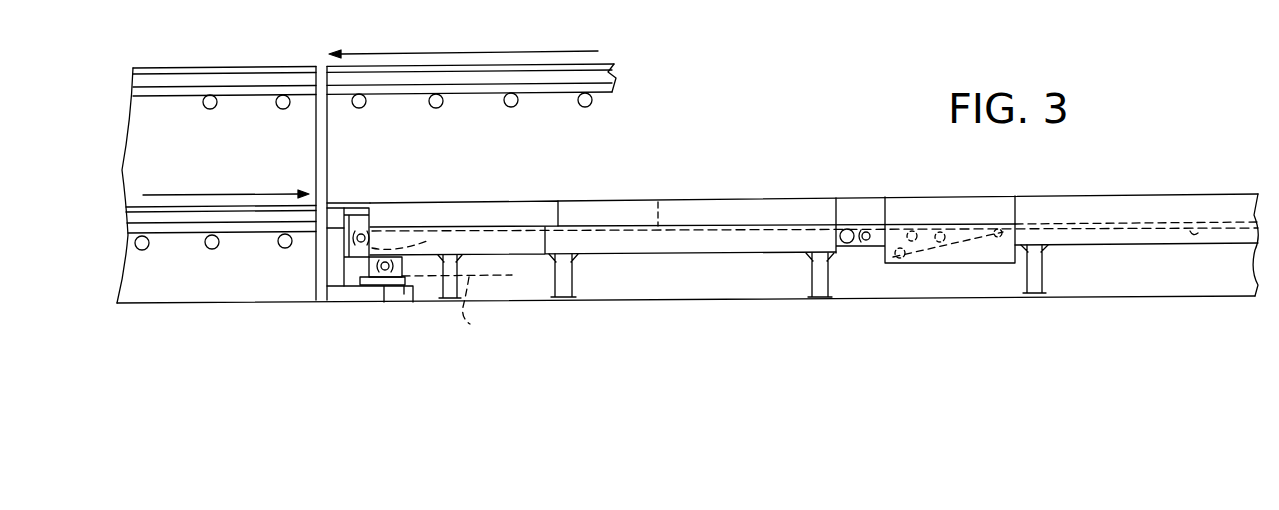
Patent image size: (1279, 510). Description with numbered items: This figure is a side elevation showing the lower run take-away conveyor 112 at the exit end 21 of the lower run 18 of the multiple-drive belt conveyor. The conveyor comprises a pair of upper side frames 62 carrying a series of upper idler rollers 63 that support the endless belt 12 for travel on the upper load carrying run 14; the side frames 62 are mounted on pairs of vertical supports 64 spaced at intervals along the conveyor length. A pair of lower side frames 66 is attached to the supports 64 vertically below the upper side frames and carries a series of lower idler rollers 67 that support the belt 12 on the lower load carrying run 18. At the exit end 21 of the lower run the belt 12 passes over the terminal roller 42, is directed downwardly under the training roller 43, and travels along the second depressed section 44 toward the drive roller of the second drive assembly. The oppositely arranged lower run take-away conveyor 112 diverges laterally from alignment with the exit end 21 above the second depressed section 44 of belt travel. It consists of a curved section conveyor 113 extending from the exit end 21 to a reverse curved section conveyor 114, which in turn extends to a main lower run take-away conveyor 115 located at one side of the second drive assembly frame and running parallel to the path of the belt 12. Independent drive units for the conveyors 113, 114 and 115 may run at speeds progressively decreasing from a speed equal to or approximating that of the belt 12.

The endless belt 12 is at (686, 307).
The upper load carrying run 14 is at (188, 62).
The lower load carrying run 18 is at (158, 200).
The exit end of the lower run 21 is at (376, 216).
The terminal roller 42 is at (417, 244).
The training roller 43 is at (398, 288).
The second depressed section 44 is at (503, 283).
The upper side frames 62 is at (243, 64).
The upper idler rollers 63 is at (212, 109).
The vertical supports 64 is at (333, 142).
The lower side frames 66 is at (182, 235).
The lower idler rollers 67 is at (214, 249).
The lower run take-away conveyor 112 is at (758, 182).
The curved section conveyor 113 is at (517, 200).
The reverse curved section conveyor 114 is at (720, 256).
The main lower run take-away conveyor 115 is at (1115, 248).